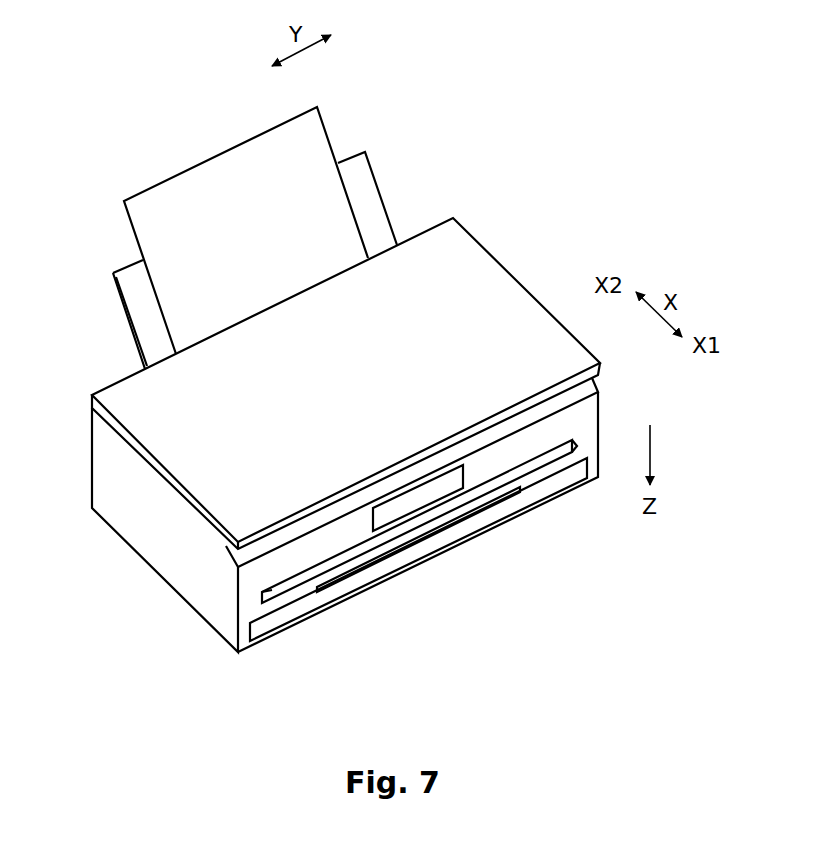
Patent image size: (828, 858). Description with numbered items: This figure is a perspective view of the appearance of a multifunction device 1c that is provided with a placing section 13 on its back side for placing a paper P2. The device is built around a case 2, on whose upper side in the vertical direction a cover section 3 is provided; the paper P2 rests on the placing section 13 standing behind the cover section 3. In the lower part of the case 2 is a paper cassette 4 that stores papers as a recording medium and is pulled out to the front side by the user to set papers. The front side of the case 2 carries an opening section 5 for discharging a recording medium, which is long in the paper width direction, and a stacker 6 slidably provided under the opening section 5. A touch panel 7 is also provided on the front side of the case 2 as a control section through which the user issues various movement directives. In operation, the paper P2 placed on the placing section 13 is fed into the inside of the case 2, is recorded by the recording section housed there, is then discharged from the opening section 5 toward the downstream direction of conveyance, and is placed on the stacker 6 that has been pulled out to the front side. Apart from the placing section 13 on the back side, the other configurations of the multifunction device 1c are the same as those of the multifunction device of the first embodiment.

The multifunction device 1c is at (530, 211).
The case 2 is at (102, 463).
The cover section 3 is at (128, 396).
The paper cassette 4 is at (292, 617).
The opening section for discharging a recording medium 5 is at (258, 598).
The stacker 6 is at (363, 565).
The touch panel 7 is at (417, 499).
The placing section 13 is at (377, 217).
The paper P2 is at (320, 141).